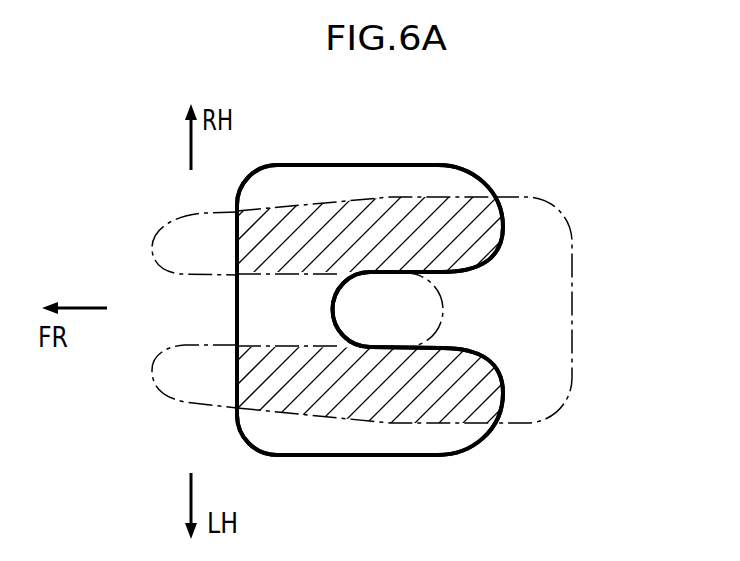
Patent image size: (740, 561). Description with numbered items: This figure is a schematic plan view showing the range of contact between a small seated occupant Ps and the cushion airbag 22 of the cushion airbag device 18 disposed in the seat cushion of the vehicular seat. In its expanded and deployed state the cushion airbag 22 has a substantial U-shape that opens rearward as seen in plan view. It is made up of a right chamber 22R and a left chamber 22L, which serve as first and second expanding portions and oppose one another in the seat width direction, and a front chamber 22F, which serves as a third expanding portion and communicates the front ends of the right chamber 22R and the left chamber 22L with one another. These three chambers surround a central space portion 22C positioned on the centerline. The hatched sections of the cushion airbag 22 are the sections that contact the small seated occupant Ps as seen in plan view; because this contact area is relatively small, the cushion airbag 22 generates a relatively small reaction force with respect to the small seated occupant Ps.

The cushion airbag 22 is at (350, 165).
The cushion airbag device 18 is at (370, 310).
The right chamber 22R is at (448, 164).
The left chamber 22L is at (451, 437).
The front chamber 22F is at (273, 311).
The central space portion 22C is at (418, 322).
The small seated occupant Ps is at (568, 182).